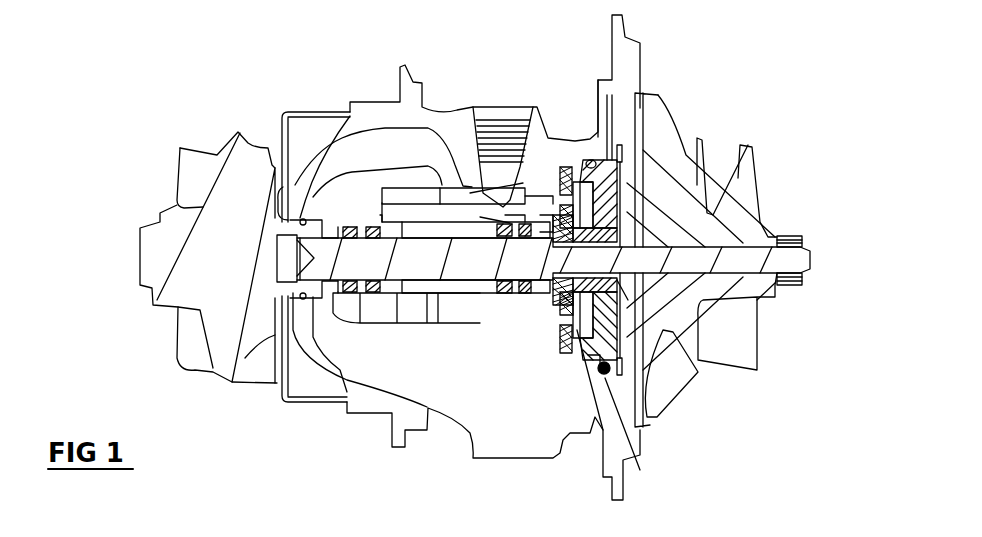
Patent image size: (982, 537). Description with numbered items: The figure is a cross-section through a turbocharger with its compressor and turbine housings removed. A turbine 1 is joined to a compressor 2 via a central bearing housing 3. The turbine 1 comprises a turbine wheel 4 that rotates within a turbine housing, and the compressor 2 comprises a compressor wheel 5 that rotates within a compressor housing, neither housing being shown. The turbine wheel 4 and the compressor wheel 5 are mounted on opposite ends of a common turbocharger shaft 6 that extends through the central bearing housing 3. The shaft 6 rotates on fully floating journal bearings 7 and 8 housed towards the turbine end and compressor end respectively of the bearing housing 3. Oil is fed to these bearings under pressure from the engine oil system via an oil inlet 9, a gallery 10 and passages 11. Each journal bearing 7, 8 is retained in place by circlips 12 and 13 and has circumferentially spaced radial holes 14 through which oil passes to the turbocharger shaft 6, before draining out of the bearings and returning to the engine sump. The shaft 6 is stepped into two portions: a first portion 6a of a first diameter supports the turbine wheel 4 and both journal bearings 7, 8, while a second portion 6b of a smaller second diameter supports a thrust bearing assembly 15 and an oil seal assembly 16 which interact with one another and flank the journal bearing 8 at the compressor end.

The turbine 1 is at (148, 136).
The compressor 2 is at (760, 105).
The central bearing housing 3 is at (403, 82).
The turbine wheel 4 is at (175, 217).
The compressor wheel 5 is at (748, 167).
The turbocharger shaft 6 is at (748, 236).
The first portion 6a is at (412, 270).
The second portion 6b is at (803, 258).
The journal bearing 7 is at (343, 282).
The journal bearing 8 is at (517, 288).
The oil inlet 9 is at (487, 107).
The gallery 10 is at (460, 193).
The passages 11 is at (373, 222).
The circlip 12 is at (356, 227).
The circlip 13 is at (490, 287).
The radial holes 14 is at (343, 228).
The thrust bearing assembly 15 is at (566, 148).
The oil seal assembly 16 is at (607, 373).